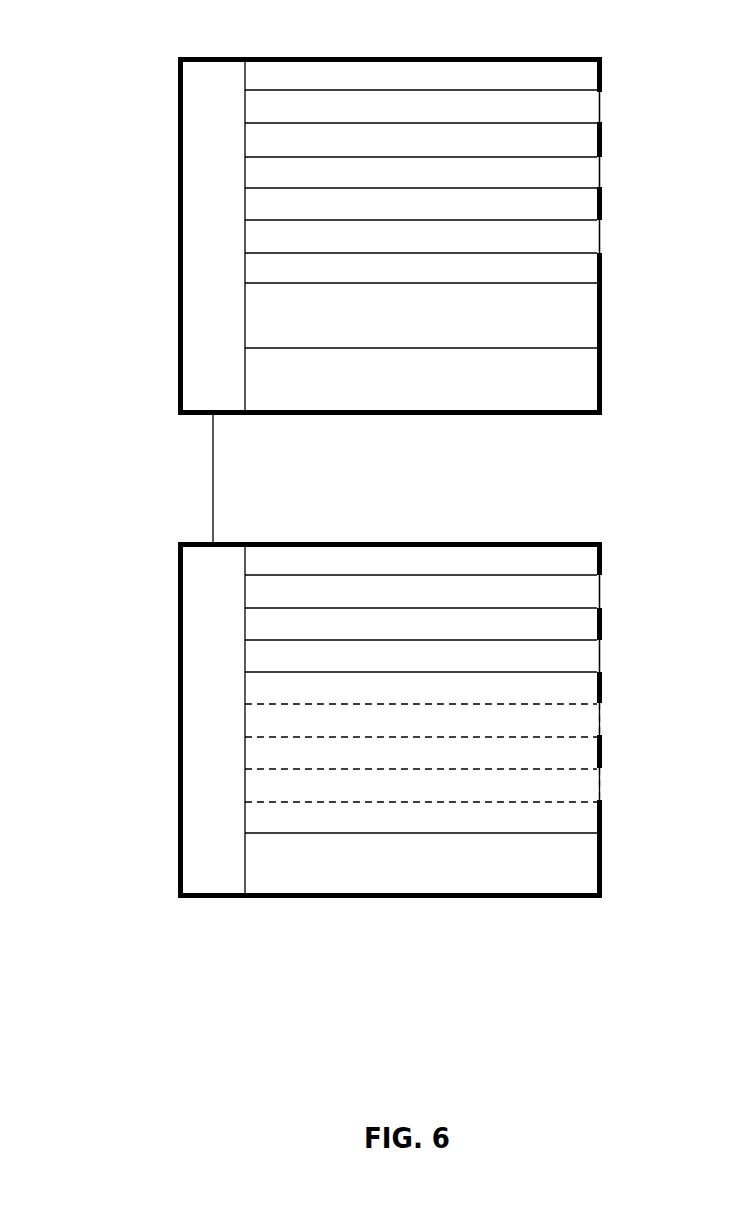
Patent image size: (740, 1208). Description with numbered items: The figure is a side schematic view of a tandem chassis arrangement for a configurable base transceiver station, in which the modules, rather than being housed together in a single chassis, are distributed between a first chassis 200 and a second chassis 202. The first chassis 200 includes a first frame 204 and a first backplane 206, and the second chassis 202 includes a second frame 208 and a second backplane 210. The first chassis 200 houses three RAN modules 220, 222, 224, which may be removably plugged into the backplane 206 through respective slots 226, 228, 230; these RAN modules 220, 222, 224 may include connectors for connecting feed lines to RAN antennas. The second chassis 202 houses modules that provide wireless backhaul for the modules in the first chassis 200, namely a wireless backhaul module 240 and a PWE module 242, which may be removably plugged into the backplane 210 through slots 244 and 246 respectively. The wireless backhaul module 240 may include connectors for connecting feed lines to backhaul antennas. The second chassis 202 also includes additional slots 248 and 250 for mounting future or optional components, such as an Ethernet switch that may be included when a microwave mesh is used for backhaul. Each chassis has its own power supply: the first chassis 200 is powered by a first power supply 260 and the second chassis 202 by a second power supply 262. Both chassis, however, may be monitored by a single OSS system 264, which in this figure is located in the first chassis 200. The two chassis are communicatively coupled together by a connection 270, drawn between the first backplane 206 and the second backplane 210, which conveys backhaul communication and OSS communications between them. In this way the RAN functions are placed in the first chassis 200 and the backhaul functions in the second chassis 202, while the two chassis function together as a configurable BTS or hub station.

The first chassis 200 is at (94, 437).
The second chassis 202 is at (94, 945).
The first frame 204 is at (424, 207).
The first backplane 206 is at (223, 236).
The second frame 208 is at (424, 692).
The second backplane 210 is at (223, 720).
The RAN module 220 is at (421, 106).
The RAN module 222 is at (421, 172).
The RAN module 224 is at (421, 236).
The slot 226 is at (602, 108).
The slot 228 is at (602, 172).
The slot 230 is at (602, 237).
The wireless backhaul module 240 is at (421, 591).
The PWE module 242 is at (421, 656).
The slot 244 is at (602, 592).
The slot 246 is at (602, 657).
The slot 248 is at (602, 720).
The slot 250 is at (602, 785).
The first power supply 260 is at (423, 381).
The second power supply 262 is at (423, 864).
The OSS system 264 is at (421, 315).
The connection 270 is at (213, 495).